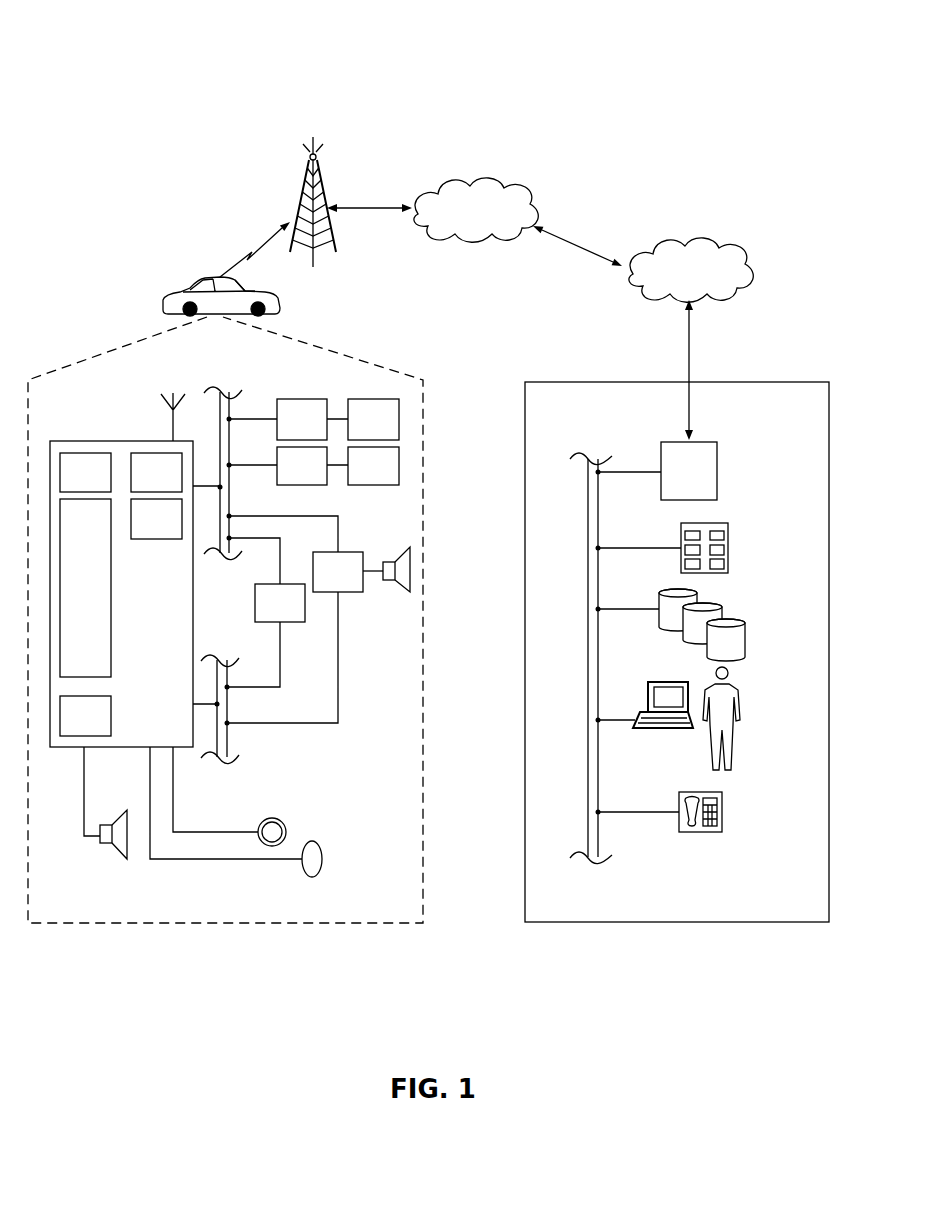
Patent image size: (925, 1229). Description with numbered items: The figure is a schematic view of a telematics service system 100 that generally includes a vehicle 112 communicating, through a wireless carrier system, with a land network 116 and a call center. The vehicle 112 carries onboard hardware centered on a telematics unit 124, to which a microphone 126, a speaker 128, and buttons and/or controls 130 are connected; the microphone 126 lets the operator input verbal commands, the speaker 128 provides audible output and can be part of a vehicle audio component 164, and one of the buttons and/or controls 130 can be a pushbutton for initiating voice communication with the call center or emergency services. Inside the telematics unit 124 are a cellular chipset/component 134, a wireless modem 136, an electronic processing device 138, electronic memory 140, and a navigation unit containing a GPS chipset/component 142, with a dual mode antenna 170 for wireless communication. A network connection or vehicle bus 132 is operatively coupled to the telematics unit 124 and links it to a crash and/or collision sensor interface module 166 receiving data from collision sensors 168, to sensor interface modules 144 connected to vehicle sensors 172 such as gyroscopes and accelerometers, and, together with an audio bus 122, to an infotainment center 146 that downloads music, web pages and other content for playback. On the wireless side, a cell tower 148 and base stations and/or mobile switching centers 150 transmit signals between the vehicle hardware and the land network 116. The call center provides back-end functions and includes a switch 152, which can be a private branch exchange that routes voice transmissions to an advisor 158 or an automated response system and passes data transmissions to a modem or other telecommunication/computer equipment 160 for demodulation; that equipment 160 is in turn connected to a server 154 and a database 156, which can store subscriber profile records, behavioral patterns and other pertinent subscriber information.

The telematics service system 100 is at (138, 52).
The vehicle 112 is at (196, 286).
The land network 116 is at (752, 270).
The audio bus 122 is at (232, 750).
The telematics unit 124 is at (193, 572).
The microphone 126 is at (314, 877).
The speaker 128 is at (107, 845).
The buttons and/or controls 130 is at (268, 819).
The vehicle bus 132 is at (233, 486).
The cellular chipset/component 134 is at (87, 452).
The wireless modem 136 is at (140, 452).
The electronic processing device 138 is at (111, 633).
The electronic memory 140 is at (111, 707).
The GPS chipset/component 142 is at (146, 540).
The sensor interface modules 144 is at (318, 487).
The infotainment center 146 is at (280, 623).
The cell tower 148 is at (305, 196).
The base stations and/or mobile switching centers 150 is at (475, 184).
The switch 152 is at (718, 471).
The server 154 is at (729, 546).
The database 156 is at (746, 641).
The advisor 158 is at (741, 706).
The telecommunication/computer equipment 160 is at (723, 812).
The vehicle audio component 164 is at (352, 593).
The crash and/or collision sensor interface module 166 is at (302, 398).
The collision sensors 168 is at (373, 398).
The dual mode antenna 170 is at (180, 395).
The vehicle sensors 172 is at (390, 487).